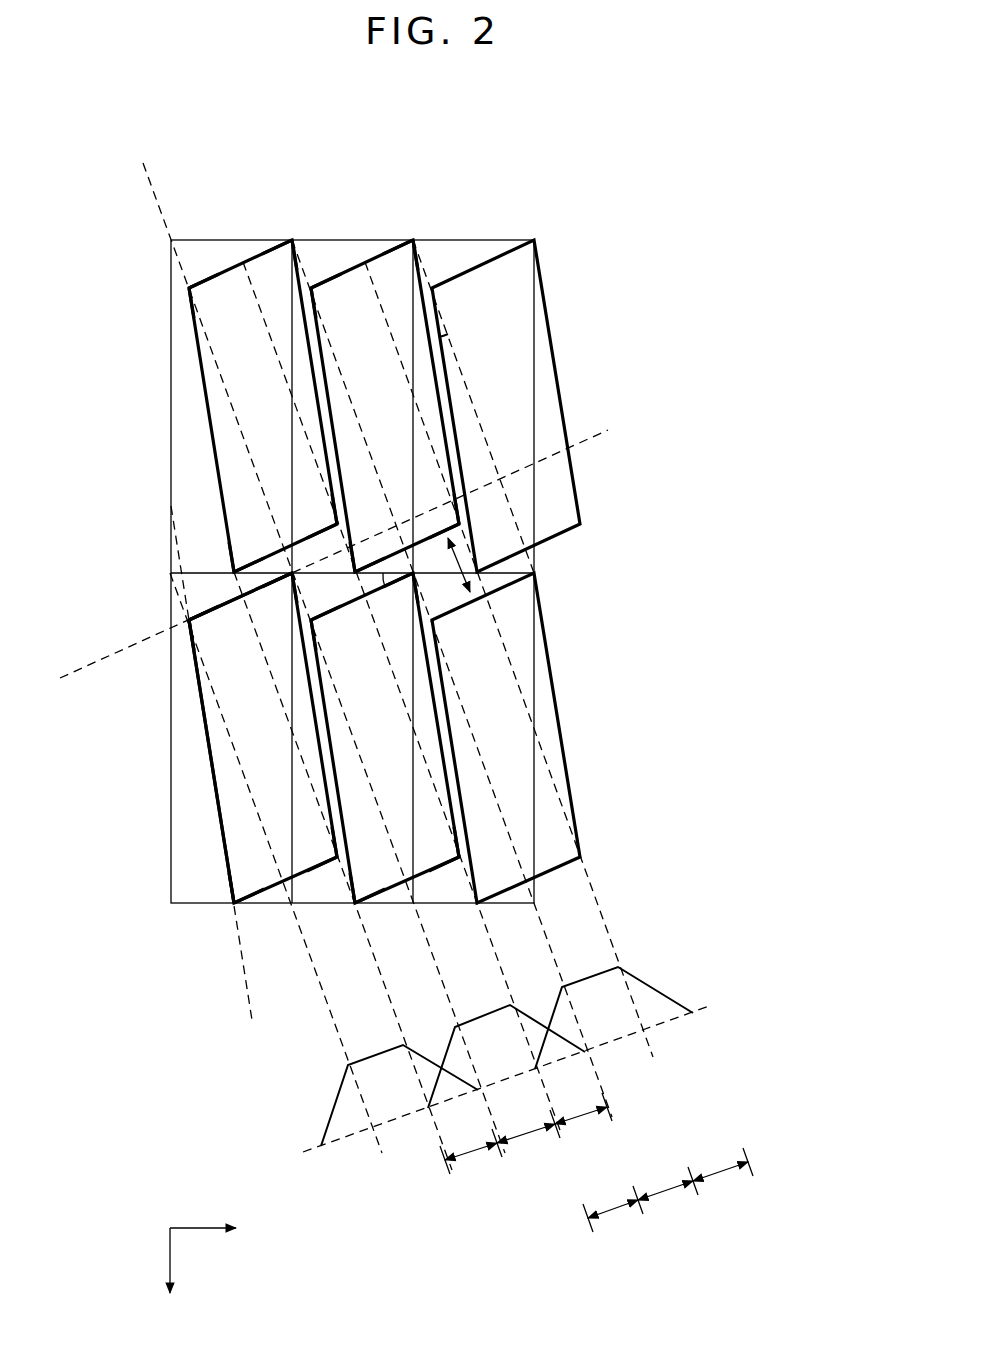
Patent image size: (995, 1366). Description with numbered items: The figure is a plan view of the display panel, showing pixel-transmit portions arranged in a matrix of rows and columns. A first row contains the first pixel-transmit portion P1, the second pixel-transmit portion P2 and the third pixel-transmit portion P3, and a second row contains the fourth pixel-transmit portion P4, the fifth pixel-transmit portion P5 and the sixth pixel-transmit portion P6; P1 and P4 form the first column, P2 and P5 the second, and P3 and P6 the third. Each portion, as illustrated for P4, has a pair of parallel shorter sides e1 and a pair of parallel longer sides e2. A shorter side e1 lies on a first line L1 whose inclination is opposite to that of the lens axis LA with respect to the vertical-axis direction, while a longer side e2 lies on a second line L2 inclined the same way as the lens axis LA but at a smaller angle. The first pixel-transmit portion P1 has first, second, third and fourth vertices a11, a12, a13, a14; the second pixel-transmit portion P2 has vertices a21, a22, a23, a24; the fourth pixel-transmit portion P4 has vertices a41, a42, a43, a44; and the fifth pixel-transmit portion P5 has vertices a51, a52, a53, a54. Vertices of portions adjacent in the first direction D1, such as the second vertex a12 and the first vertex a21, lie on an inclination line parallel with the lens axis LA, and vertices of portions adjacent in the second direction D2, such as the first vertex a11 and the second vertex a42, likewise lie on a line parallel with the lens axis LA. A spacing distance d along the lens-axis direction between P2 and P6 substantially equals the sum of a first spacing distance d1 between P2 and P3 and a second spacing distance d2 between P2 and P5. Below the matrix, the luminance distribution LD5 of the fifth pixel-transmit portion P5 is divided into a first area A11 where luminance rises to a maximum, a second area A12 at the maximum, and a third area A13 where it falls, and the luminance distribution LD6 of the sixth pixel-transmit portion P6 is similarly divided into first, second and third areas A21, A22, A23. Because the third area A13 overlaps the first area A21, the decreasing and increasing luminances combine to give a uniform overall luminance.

The lens axis LA is at (149, 178).
The first line L1 is at (85, 674).
The second line L2 is at (247, 996).
The first pixel-transmit portion P1 is at (263, 406).
The second pixel-transmit portion P2 is at (385, 406).
The third pixel-transmit portion P3 is at (506, 406).
The fourth pixel-transmit portion P4 is at (263, 738).
The fifth pixel-transmit portion P5 is at (385, 738).
The sixth pixel-transmit portion P6 is at (506, 738).
The first vertex of the first pixel-transmit portion a11 is at (188, 288).
The second vertex of the first pixel-transmit portion a12 is at (292, 239).
The third vertex of the first pixel-transmit portion a13 is at (233, 572).
The fourth vertex of the first pixel-transmit portion a14 is at (336, 524).
The first vertex of the second pixel-transmit portion a21 is at (311, 287).
The second vertex of the second pixel-transmit portion a22 is at (413, 239).
The third vertex of the second pixel-transmit portion a23 is at (356, 571).
The fourth vertex of the second pixel-transmit portion a24 is at (460, 524).
The first vertex of the fourth pixel-transmit portion a41 is at (188, 620).
The second vertex of the fourth pixel-transmit portion a42 is at (291, 573).
The third vertex of the fourth pixel-transmit portion a43 is at (233, 904).
The fourth vertex of the fourth pixel-transmit portion a44 is at (337, 858).
The first vertex of the fifth pixel-transmit portion a51 is at (312, 622).
The second vertex of the fifth pixel-transmit portion a52 is at (414, 575).
The third vertex of the fifth pixel-transmit portion a53 is at (355, 905).
The fourth vertex of the fifth pixel-transmit portion a54 is at (459, 858).
The shorter side e1 is at (217, 605).
The longer side e2 is at (216, 793).
The first spacing distance d1 is at (445, 333).
The second spacing distance d2 is at (372, 584).
The spacing distance d is at (454, 565).
The luminance distribution of the fifth pixel-transmit portion LD5 is at (485, 1016).
The luminance distribution of the sixth pixel-transmit portion LD6 is at (590, 976).
The first area A11 is at (473, 1161).
The second area A12 is at (528, 1144).
The third area A13 is at (583, 1125).
The first area A21 is at (617, 1222).
The second area A22 is at (671, 1201).
The third area A23 is at (727, 1182).
The first direction D1 is at (221, 1230).
The second direction D2 is at (169, 1277).